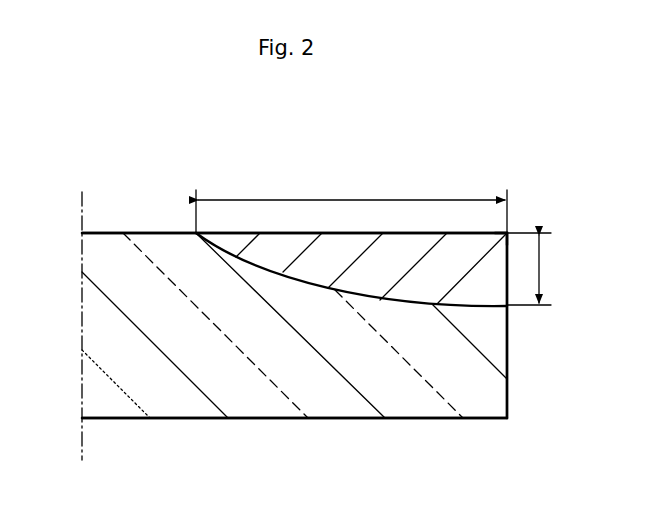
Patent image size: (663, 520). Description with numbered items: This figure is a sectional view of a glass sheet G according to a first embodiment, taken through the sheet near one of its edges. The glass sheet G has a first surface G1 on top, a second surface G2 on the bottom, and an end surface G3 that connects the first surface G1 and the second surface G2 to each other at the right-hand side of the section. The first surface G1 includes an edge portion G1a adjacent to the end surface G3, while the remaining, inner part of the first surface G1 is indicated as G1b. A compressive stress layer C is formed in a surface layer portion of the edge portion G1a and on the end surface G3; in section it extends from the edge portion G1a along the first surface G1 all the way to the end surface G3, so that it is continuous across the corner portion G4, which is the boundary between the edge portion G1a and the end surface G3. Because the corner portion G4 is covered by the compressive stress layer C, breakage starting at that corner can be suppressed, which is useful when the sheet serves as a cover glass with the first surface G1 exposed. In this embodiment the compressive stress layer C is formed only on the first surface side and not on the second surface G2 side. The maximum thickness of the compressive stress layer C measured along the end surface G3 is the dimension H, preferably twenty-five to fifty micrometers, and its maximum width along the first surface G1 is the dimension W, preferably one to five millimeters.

The glass sheet G is at (358, 175).
The first surface G1 is at (160, 231).
The edge portion of the first surface G1a is at (427, 232).
The side portion of first layer G1b is at (107, 232).
The second surface G2 is at (181, 422).
The end surface G3 is at (507, 354).
The corner portion G4 is at (507, 233).
The compressive stress layer C is at (369, 277).
The width direction dimension W is at (312, 199).
The thickness direction dimension H is at (541, 268).